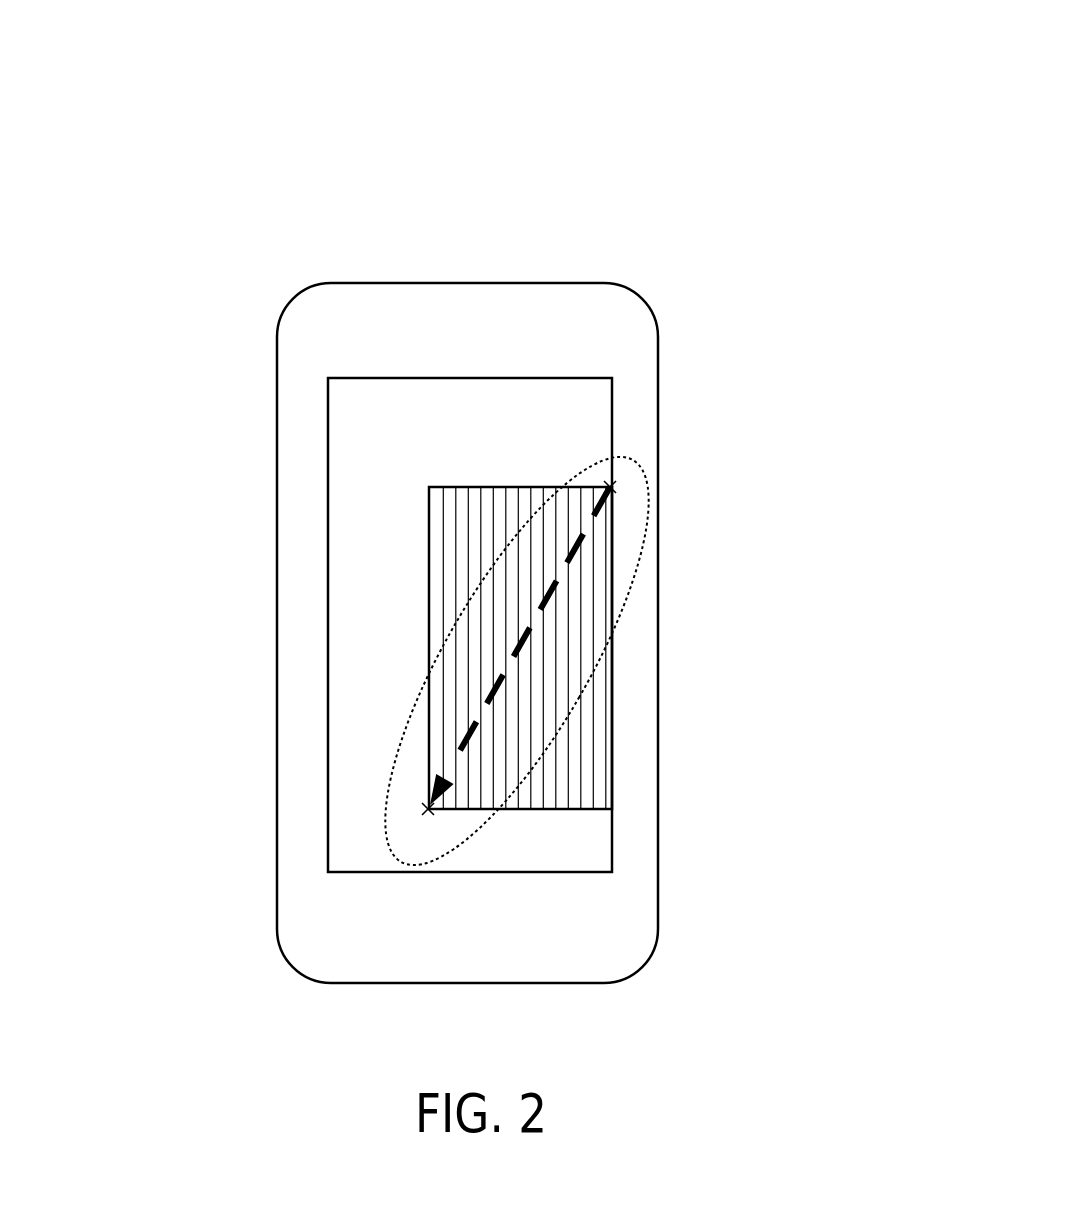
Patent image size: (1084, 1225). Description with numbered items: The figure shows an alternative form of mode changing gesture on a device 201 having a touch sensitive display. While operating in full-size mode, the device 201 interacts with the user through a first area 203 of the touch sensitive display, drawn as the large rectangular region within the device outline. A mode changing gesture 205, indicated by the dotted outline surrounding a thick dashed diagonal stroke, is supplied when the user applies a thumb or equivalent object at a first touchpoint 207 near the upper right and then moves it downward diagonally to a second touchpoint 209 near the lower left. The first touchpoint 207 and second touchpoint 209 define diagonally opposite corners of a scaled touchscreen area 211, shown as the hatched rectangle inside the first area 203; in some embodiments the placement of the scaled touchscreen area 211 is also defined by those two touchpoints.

The device 201 is at (467, 495).
The first area of the touch sensitive display 203 is at (355, 715).
The mode changing gesture 205 is at (607, 512).
The first touchpoint 207 is at (782, 417).
The second touchpoint 209 is at (673, 909).
The scaled touchscreen area 211 is at (690, 714).